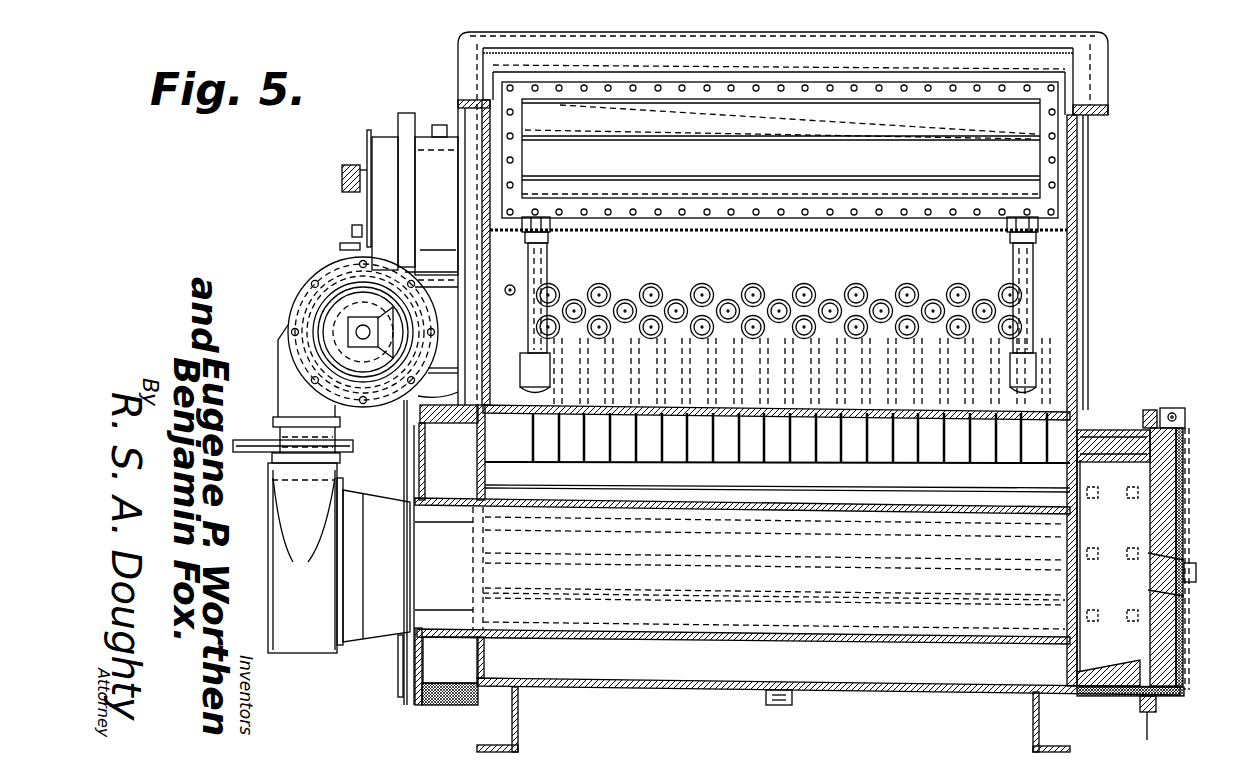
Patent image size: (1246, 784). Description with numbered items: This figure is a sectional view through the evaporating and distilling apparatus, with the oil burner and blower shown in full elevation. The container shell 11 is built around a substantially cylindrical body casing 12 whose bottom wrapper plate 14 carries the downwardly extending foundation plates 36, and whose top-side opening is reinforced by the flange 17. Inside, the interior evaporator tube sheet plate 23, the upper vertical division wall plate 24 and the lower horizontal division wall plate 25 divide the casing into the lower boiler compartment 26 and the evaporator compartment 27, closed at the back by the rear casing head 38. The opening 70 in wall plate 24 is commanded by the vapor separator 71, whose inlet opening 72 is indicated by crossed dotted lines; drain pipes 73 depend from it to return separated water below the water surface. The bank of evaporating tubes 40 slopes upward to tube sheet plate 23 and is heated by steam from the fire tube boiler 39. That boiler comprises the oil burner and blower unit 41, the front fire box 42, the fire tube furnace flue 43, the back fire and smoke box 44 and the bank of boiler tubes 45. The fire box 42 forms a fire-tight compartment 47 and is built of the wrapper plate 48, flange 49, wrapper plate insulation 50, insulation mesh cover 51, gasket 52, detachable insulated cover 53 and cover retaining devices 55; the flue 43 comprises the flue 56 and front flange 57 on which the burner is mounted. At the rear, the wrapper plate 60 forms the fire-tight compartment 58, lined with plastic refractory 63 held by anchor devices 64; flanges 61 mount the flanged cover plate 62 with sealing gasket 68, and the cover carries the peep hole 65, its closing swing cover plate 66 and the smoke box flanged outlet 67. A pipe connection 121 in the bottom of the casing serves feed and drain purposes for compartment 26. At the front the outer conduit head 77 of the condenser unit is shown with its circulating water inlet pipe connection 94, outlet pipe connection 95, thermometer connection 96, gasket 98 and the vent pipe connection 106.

The flange 17 is at (1000, 32).
The interior evaporator tube sheet plate 23 is at (1085, 300).
The rear casing head 38 is at (1078, 245).
The evaporator compartment 27 is at (1075, 372).
The upper vertical division wall plate 24 is at (1052, 205).
The inlet opening 72 is at (781, 148).
The vapor separator 71 is at (1060, 150).
The opening 70 is at (1042, 178).
The drain pipes 73 is at (1030, 292).
The evaporating tubes 40 is at (665, 292).
The bank of boiler tubes 45 is at (1035, 470).
The lower horizontal division wall plate 25 is at (776, 450).
The fire-tight compartment 47 is at (416, 505).
The fire tube furnace flue 43 is at (565, 634).
The bottom wrapper plate 14 is at (712, 681).
The flue 56 is at (842, 688).
The lower boiler compartment 26 is at (906, 670).
The body casing 12 is at (640, 688).
The container shell 11 is at (828, 707).
The pipe connection 121 is at (786, 705).
The foundation plates 36 is at (520, 735).
The wrapper plate 48 is at (452, 452).
The front flange 57 is at (442, 461).
The gasket 52 is at (412, 706).
The flange 49 is at (420, 702).
The wrapper plate insulation 50 is at (480, 690).
The insulation mesh cover 51 is at (455, 704).
The cover retaining devices 55 is at (402, 698).
The fire-tight compartment 58 is at (1135, 520).
The plastic refractory 63 is at (1148, 468).
The back fire and smoke box 44 is at (1180, 655).
The smoke box flanged outlet 67 is at (1188, 475).
The flanges 61 is at (1152, 410).
The wrapper plate 60 is at (1100, 422).
The flanged cover plate 62 is at (1180, 694).
The sealing gasket 68 is at (1147, 715).
The peep hole 65 is at (1150, 572).
The anchor devices 64 is at (1142, 600).
The closing swing cover plate 66 is at (1188, 580).
The oil burner and blower unit 41 is at (282, 365).
The detachable insulated cover 53 is at (395, 428).
The front fire box 42 is at (410, 455).
The fire tube boiler 39 is at (292, 645).
The outer conduit head 77 is at (373, 137).
The gasket 98 is at (404, 113).
The vent pipe connection 106 is at (440, 137).
The circulating water outlet pipe connection 95 is at (342, 172).
The thermometer connection 96 is at (352, 230).
The circulating water inlet pipe connection 94 is at (340, 247).